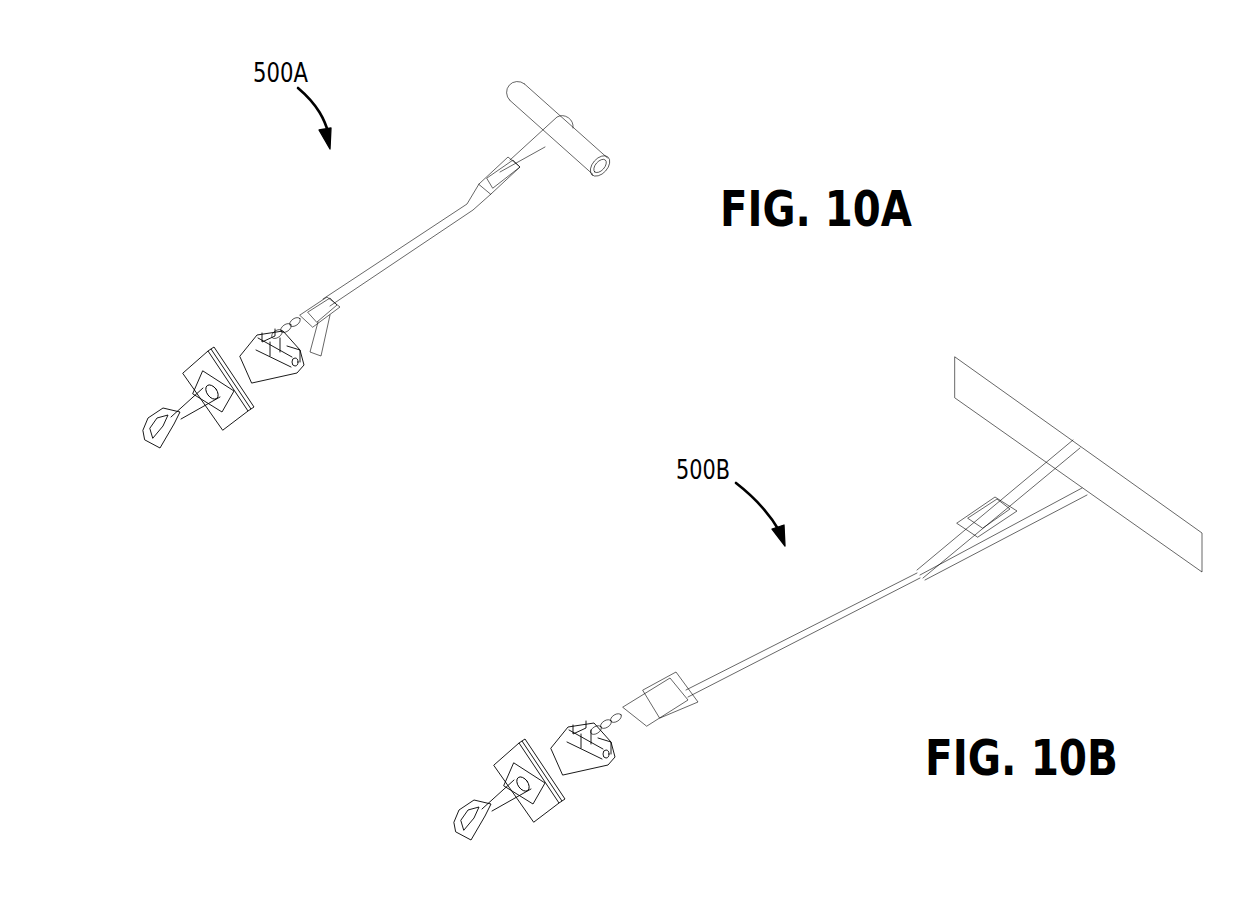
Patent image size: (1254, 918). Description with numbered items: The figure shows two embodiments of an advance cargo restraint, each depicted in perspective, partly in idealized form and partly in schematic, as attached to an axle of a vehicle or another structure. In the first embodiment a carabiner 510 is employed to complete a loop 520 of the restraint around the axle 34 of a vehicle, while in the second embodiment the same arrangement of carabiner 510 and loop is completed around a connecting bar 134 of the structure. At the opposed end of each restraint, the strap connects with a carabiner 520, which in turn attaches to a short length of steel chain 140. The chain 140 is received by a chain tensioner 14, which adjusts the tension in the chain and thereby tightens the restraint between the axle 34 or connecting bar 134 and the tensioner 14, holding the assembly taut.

In FIG. 10A, the chain tensioner 14 is at (207, 358).
In FIG. 10B, the chain tensioner 14 is at (506, 763).
In FIG. 10A, the axle 34 is at (582, 146).
In FIG. 10B, the connecting bar 134 is at (982, 395).
In FIG. 10A, the steel chain 140 is at (297, 322).
In FIG. 10B, the steel chain 140 is at (616, 718).
In FIG. 10A, the carabiner 510 is at (498, 186).
In FIG. 10B, the carabiner 510 is at (980, 507).
In FIG. 10A, the carabiner 520 is at (343, 306).
In FIG. 10B, the carabiner 520 is at (674, 710).